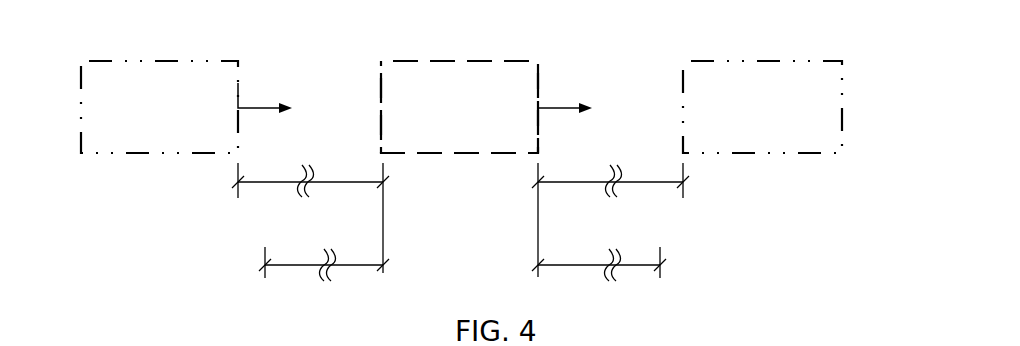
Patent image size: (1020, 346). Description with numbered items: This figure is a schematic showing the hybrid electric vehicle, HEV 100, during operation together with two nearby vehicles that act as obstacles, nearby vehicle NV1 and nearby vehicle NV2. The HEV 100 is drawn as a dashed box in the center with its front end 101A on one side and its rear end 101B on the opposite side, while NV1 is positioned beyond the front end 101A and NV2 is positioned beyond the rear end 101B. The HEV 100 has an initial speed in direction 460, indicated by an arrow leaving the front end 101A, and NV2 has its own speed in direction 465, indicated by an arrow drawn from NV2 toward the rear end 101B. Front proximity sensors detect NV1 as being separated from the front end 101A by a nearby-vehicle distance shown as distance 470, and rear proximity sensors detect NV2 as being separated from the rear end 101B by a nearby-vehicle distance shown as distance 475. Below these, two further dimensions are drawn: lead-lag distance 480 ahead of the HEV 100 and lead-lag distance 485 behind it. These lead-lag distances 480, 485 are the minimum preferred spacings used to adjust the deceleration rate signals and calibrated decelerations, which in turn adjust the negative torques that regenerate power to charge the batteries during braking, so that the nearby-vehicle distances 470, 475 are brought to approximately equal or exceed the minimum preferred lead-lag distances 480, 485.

The HEV 100 is at (430, 60).
The front end 101A is at (540, 68).
The rear end 101B is at (379, 75).
The direction 460 is at (562, 105).
The direction 465 is at (262, 106).
The distance 470 is at (659, 183).
The distance 475 is at (339, 183).
The lead-lag distance 480 is at (638, 266).
The lead-lag distance 485 is at (353, 266).
The nearby vehicle NV1 is at (770, 153).
The nearby vehicle NV2 is at (135, 153).